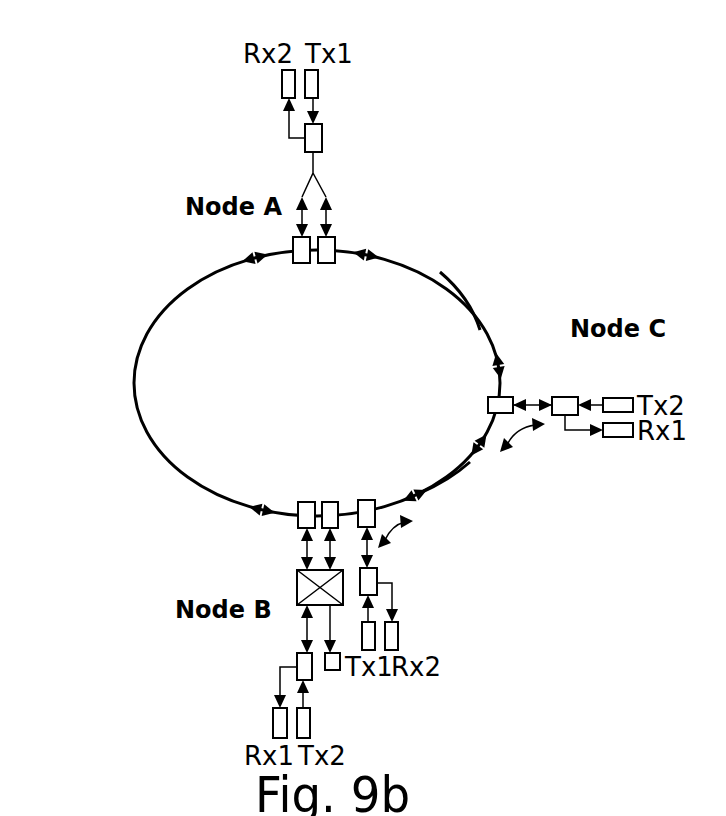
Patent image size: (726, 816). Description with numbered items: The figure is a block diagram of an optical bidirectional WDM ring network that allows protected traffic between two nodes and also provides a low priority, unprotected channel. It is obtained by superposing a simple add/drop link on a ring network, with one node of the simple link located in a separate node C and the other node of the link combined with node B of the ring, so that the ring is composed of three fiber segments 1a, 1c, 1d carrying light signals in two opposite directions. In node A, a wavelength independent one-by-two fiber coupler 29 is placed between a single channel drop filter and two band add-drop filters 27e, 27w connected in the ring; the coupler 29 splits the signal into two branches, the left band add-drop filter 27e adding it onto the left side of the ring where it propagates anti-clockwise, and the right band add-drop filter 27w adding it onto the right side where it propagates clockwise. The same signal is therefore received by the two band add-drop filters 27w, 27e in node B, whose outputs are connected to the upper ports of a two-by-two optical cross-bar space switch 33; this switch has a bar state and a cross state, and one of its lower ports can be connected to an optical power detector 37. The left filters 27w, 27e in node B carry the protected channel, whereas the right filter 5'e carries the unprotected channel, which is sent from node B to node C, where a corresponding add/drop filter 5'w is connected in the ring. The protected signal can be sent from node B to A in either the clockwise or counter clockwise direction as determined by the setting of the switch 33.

The ring fiber segment 1a is at (138, 355).
The ring fiber segment 1c is at (455, 470).
The ring fiber segment 1d is at (466, 298).
The two-channel add/drop filter 5'w is at (470, 406).
The two-channel add/drop filter 5'e is at (377, 487).
The band add-drop filter 27e is at (301, 263).
The band add-drop filter 27w is at (323, 263).
The 1×2 fiber coupler 29 is at (311, 172).
The 2×2 optical cross-bar space switch 33 is at (297, 584).
The optical power detector 37 is at (334, 670).